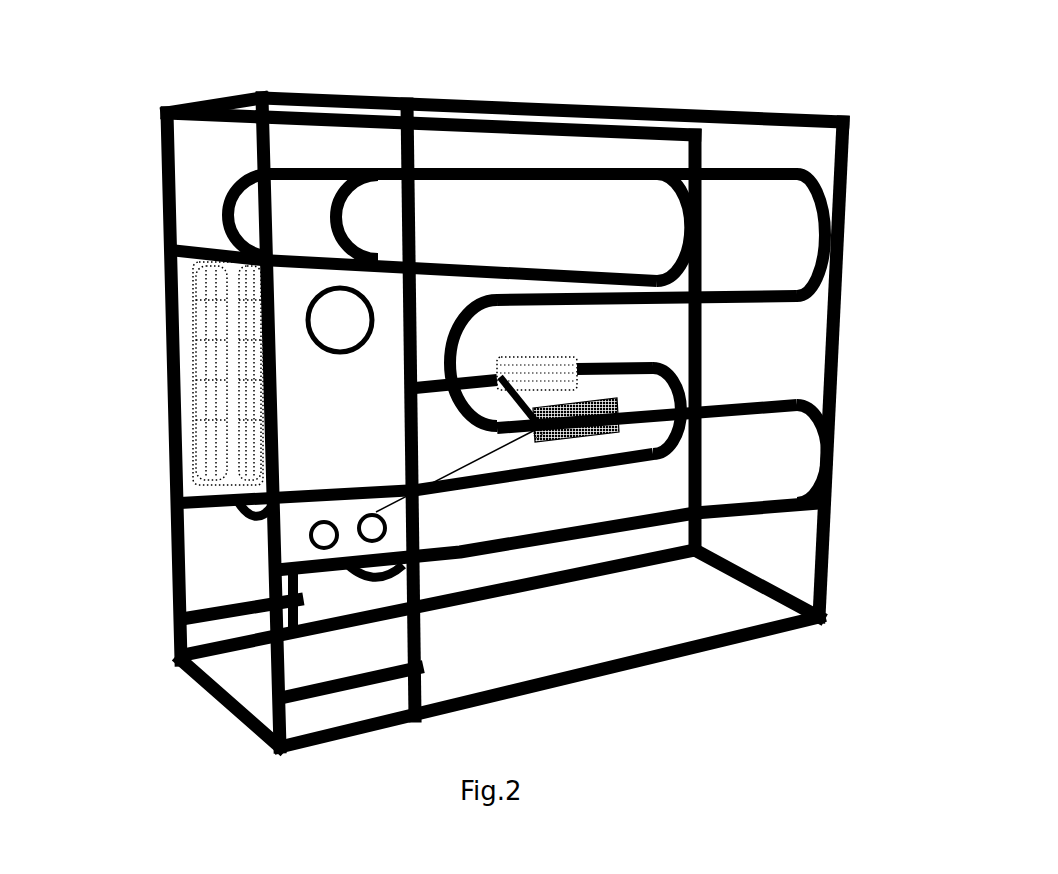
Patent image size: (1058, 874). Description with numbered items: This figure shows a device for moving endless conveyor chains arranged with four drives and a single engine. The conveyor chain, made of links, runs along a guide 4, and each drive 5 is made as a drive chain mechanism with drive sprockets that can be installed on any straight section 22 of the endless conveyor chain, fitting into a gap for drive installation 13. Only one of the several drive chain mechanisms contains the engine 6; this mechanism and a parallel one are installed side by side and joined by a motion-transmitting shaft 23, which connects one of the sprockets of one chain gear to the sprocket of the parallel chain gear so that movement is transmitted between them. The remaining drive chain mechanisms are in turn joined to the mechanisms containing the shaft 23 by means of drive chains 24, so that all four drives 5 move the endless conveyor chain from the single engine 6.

The guide 4 is at (556, 326).
The drive 5 is at (215, 460).
The engine 6 is at (340, 318).
The gap for drive installation 13 is at (215, 460).
The straight section 22 is at (720, 410).
The shaft 23 is at (512, 377).
The drive chain 24 is at (418, 487).